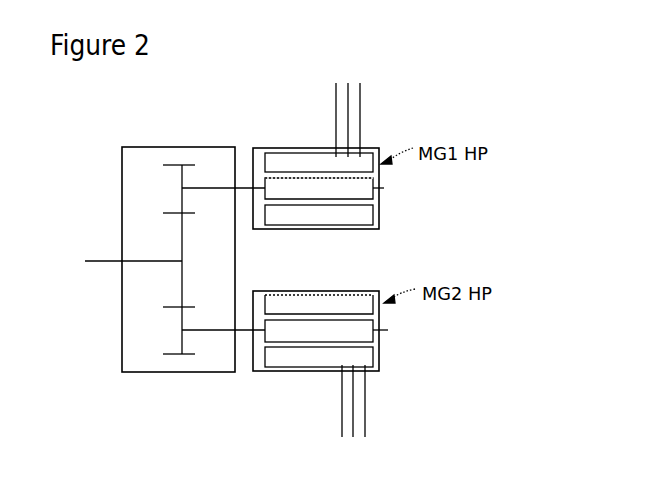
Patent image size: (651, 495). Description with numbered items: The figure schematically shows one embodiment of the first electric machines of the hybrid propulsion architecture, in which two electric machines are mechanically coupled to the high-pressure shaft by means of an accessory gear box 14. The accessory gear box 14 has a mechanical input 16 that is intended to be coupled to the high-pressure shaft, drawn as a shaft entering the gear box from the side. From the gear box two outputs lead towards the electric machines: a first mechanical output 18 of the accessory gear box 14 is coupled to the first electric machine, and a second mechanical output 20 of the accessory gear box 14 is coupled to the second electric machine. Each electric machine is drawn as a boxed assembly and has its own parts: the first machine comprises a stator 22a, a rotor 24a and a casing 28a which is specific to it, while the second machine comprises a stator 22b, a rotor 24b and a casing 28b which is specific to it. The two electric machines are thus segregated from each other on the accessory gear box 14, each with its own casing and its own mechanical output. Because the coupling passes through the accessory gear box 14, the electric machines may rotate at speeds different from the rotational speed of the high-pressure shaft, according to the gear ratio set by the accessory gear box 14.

The accessory gear box 14 is at (155, 148).
The mechanical input 16 is at (88, 264).
The first mechanical output 18 is at (241, 186).
The second mechanical output 20 is at (243, 333).
The stator 22a is at (356, 165).
The rotor 24a is at (364, 185).
The casing 28a is at (295, 150).
The stator 22b is at (335, 300).
The rotor 24b is at (368, 335).
The casing 28b is at (273, 291).